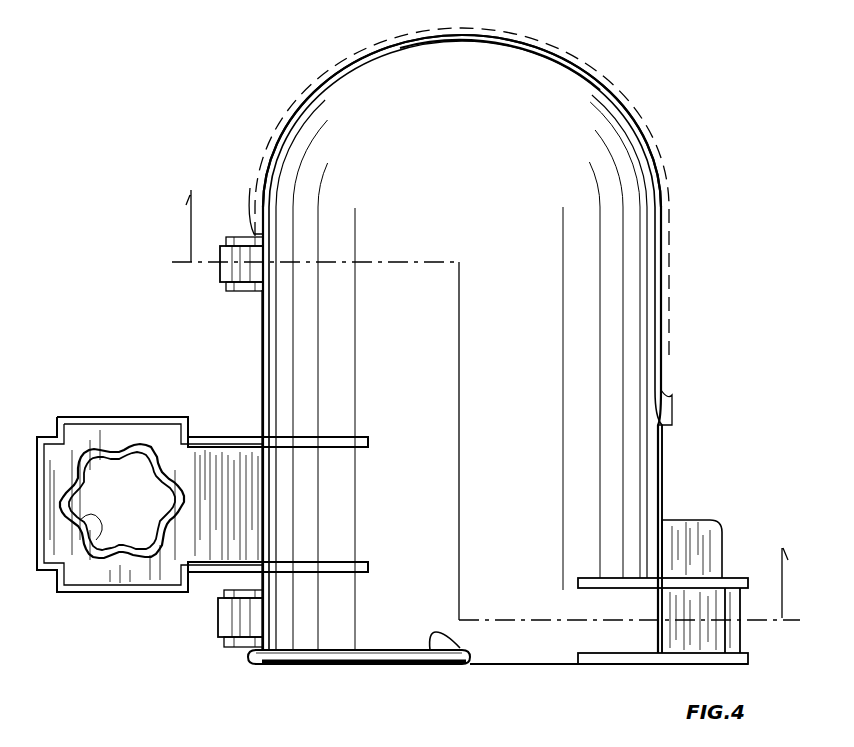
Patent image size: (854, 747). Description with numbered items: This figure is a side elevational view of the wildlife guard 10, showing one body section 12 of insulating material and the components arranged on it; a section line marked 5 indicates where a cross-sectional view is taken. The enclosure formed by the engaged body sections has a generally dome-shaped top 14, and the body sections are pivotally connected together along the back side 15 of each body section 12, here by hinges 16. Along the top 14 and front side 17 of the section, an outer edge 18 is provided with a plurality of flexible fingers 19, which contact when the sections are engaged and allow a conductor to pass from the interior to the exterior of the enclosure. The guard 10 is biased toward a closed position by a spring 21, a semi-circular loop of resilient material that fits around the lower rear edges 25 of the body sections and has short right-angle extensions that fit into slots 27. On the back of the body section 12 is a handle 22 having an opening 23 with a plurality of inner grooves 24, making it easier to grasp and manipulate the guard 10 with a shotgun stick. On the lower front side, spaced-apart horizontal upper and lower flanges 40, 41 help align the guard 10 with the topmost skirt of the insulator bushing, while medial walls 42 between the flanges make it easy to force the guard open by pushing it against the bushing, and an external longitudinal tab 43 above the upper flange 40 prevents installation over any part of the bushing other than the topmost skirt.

The wildlife guard 10 is at (298, 82).
The body section 12 is at (278, 140).
The dome-shaped top 14 is at (328, 118).
The back side 15 is at (262, 318).
The hinge 16 is at (228, 290).
The front side 17 is at (663, 470).
The outer edge 18 is at (585, 73).
The flexible fingers 19 is at (610, 90).
The spring 21 is at (378, 652).
The handle 22 is at (137, 416).
The opening 23 is at (110, 548).
The inner grooves 24 is at (125, 530).
The lower rear edge 25 is at (478, 665).
The slot 27 is at (432, 636).
The upper flange 40 is at (606, 583).
The lower flange 41 is at (672, 660).
The medial wall 42 is at (666, 632).
The external longitudinal tab 43 is at (705, 520).
The section line 5- 5 is at (484, 405).